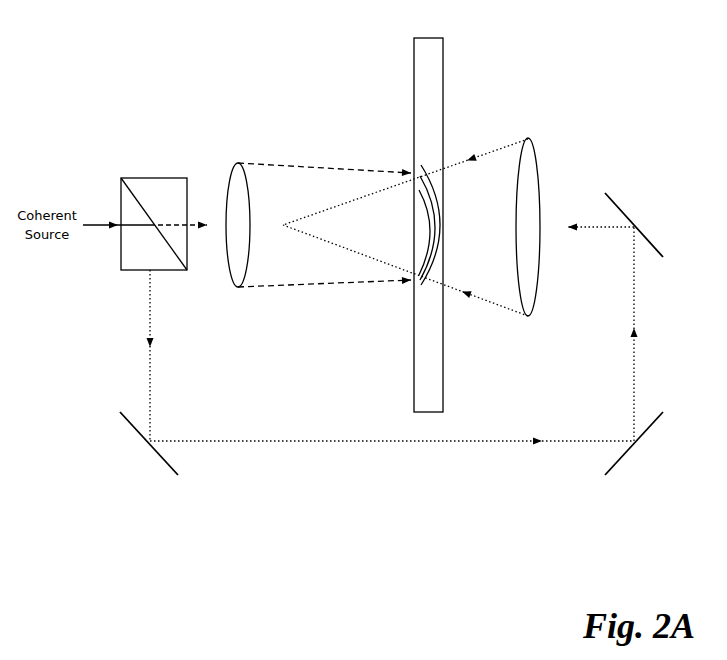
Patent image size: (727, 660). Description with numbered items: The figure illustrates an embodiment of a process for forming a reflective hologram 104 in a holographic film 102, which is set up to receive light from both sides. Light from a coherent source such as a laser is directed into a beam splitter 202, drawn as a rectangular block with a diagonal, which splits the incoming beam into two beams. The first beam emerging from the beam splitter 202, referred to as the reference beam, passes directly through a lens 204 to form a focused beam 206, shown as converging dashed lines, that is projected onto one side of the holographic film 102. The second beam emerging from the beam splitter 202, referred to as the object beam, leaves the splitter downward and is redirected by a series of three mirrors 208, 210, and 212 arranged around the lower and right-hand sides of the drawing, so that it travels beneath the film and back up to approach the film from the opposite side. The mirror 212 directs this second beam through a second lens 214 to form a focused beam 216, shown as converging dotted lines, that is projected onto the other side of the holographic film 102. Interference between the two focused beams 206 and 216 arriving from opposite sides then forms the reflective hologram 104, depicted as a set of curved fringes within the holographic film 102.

The holographic film 102 is at (428, 48).
The reflective hologram 104 is at (427, 165).
The beam splitter 202 is at (160, 180).
The lens 204 is at (239, 162).
The focused beam 206 is at (268, 260).
The mirror 208 is at (167, 463).
The mirror 210 is at (617, 462).
The mirror 212 is at (656, 248).
The lens 214 is at (528, 138).
The focused beam 216 is at (487, 283).